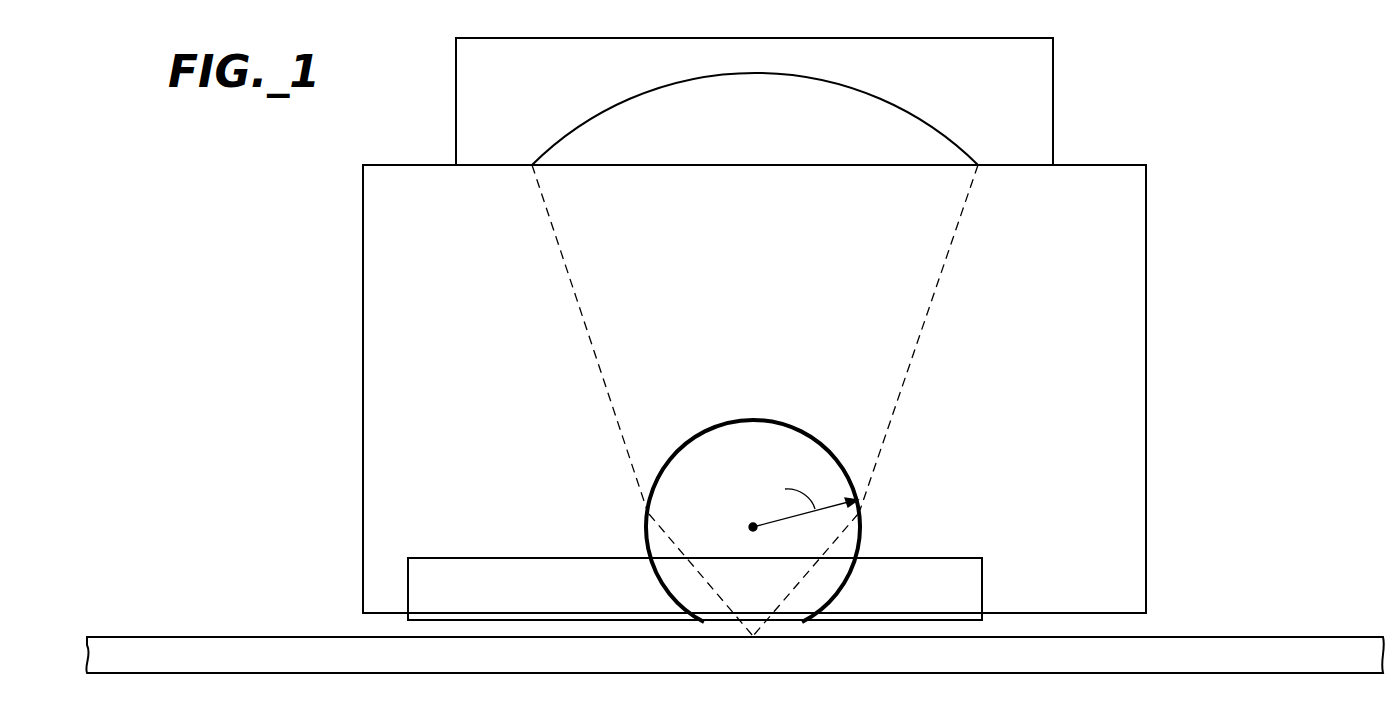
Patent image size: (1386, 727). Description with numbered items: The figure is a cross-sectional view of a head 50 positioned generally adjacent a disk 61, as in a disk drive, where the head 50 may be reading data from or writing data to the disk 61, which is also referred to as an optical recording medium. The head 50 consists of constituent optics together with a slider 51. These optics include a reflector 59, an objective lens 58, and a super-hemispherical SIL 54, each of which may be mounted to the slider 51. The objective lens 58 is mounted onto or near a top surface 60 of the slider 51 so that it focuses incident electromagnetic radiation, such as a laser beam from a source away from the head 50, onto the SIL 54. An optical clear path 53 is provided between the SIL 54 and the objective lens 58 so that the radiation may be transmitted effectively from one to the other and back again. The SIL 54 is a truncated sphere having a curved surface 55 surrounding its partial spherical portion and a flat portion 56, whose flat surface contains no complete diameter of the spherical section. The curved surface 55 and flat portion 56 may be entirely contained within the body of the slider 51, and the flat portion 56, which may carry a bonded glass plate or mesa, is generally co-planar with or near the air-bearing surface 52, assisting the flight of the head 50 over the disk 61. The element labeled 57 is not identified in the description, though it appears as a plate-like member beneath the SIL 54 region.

The head 50 is at (1209, 281).
The slider 51 is at (463, 368).
The air-bearing surface 52 is at (388, 614).
The optical clear path 53 is at (765, 272).
The SIL 54 is at (750, 421).
The curved surface 55 is at (800, 432).
The flat portion 56 is at (792, 610).
The retaining plate 57 is at (524, 560).
The objective lens 58 is at (765, 128).
The reflector 59 is at (1053, 98).
The top surface 60 is at (1087, 165).
The disk 61 is at (1296, 634).